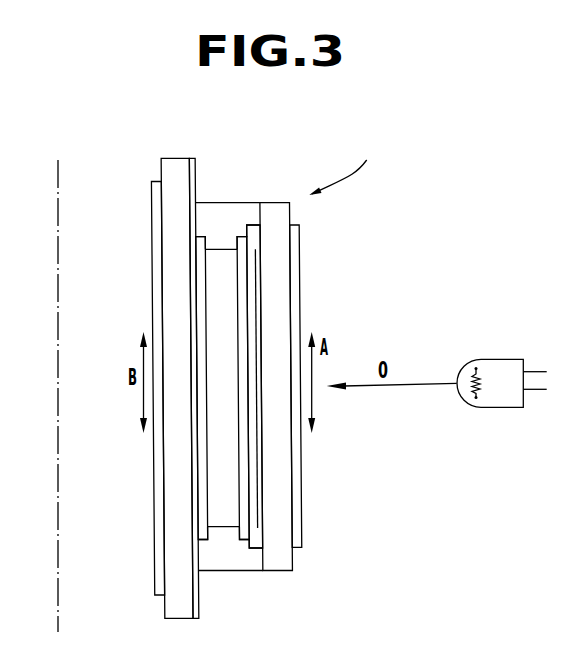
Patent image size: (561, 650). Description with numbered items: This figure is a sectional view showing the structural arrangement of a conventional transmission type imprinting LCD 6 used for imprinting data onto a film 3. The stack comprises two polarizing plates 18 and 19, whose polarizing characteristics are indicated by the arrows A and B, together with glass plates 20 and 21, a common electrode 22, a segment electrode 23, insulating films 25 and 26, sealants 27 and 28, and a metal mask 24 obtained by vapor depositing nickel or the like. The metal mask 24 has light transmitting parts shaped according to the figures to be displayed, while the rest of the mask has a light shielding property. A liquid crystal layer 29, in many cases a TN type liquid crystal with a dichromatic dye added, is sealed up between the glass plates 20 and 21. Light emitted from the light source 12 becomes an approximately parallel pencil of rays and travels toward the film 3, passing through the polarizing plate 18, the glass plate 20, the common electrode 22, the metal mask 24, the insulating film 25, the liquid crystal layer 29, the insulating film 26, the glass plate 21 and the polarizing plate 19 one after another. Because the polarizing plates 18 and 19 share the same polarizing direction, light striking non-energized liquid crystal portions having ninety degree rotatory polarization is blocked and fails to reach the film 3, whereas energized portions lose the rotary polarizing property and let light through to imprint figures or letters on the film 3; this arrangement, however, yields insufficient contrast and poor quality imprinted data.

The film 3 is at (60, 574).
The imprinting LCD 6 is at (373, 156).
The light source 12 is at (497, 363).
The polarizing plate 18 is at (296, 386).
The polarizing plate 19 is at (157, 389).
The glass plate 20 is at (276, 387).
The glass plate 21 is at (177, 388).
The common electrode 22 is at (256, 388).
The segment electrode 23 is at (193, 388).
The metal mask 24 is at (255, 386).
The insulating film 25 is at (243, 388).
The insulating film 26 is at (202, 388).
The sealant 27 is at (228, 226).
The sealant 28 is at (230, 549).
The liquid crystal layer 29 is at (222, 387).